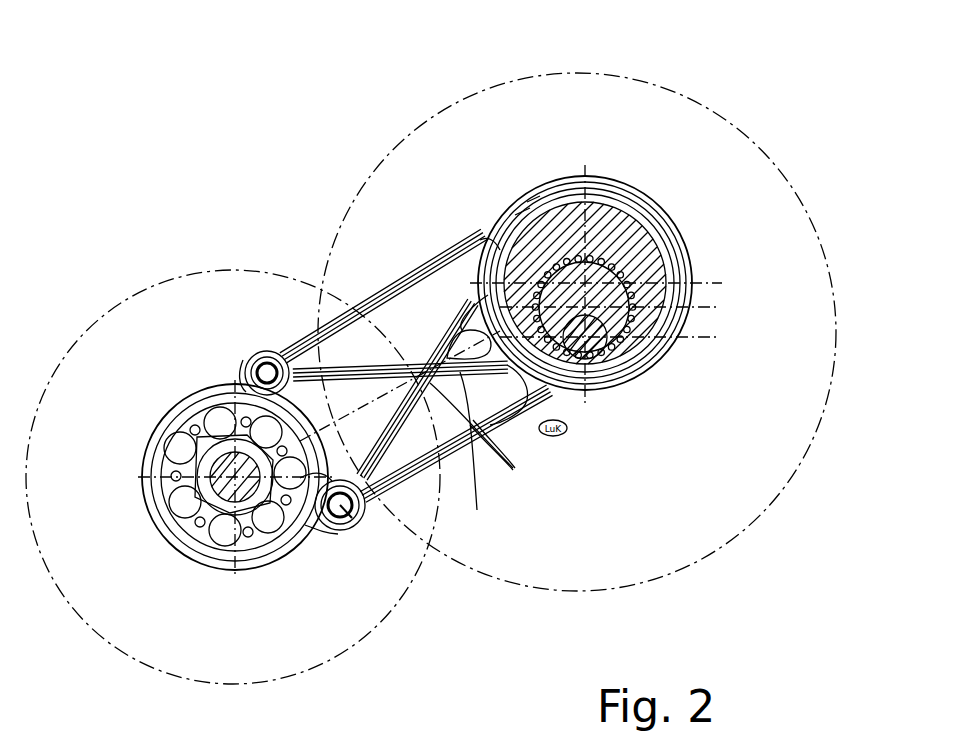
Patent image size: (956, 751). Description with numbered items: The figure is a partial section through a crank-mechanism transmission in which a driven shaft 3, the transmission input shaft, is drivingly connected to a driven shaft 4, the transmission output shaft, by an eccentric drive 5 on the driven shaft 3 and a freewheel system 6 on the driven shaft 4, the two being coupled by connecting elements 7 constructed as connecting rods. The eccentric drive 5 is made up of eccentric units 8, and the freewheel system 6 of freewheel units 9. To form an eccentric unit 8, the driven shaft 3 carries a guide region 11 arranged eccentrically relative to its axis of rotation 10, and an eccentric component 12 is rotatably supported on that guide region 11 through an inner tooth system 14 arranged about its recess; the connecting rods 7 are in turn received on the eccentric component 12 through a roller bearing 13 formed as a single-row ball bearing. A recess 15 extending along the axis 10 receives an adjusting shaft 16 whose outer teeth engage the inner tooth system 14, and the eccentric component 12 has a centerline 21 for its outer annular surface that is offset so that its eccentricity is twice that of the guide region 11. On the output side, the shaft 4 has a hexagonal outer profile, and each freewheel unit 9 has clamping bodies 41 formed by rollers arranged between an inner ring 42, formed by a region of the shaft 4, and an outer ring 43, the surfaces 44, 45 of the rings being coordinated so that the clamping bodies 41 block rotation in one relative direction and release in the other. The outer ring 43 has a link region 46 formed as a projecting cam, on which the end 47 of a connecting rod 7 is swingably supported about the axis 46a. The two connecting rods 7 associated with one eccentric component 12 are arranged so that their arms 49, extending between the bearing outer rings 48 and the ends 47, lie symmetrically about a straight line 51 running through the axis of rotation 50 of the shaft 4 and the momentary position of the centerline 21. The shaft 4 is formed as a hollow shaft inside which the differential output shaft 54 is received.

The driven shaft 3 is at (645, 318).
The driven shaft 4 is at (197, 520).
The eccentric drive 5 is at (628, 158).
The freewheel system 6 is at (140, 615).
The connecting element 7 is at (393, 300).
The eccentric unit 8 is at (658, 187).
The freewheel unit 9 is at (136, 520).
The axis of rotation 10 is at (583, 345).
The guide region 11 is at (640, 207).
The eccentric component 12 is at (536, 256).
The roller bearing 13 is at (537, 198).
The inner tooth system 14 is at (574, 268).
The recess 15 is at (648, 292).
The adjusting shaft 16 is at (592, 345).
The centerline 21 is at (630, 272).
The clamping bodies 41 is at (180, 456).
The inner ring 42 is at (230, 442).
The outer ring 43 is at (215, 432).
The surface 44 is at (276, 522).
The surface 45 is at (254, 536).
The link region 46 is at (341, 532).
The axis 46a is at (354, 516).
The end 47 is at (256, 360).
The bearing outer ring 48 is at (666, 228).
The arms 49 is at (413, 280).
The axis of rotation 50 is at (233, 556).
The straight line 51 is at (325, 365).
The output shaft 54 is at (200, 436).